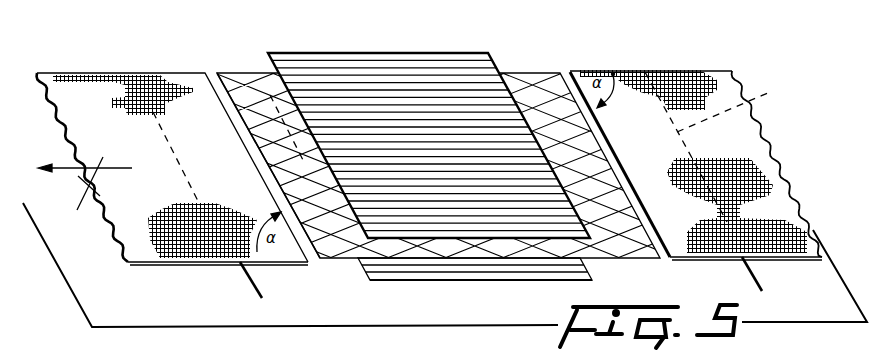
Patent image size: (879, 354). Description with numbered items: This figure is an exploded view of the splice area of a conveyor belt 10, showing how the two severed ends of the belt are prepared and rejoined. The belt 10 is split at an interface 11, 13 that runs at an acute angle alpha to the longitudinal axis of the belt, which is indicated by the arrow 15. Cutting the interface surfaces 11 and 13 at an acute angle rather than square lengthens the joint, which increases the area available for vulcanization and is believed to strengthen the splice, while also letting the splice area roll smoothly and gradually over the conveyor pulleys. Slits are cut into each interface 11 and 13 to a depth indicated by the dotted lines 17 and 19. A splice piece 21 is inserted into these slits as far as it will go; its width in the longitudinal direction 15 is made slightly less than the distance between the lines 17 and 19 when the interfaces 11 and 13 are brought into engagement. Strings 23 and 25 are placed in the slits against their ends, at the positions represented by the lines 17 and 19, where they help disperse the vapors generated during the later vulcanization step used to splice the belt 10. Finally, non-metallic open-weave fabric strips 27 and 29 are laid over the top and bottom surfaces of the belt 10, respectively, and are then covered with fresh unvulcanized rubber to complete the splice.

The belt 10 is at (76, 66).
The interface 11 is at (213, 73).
The interface 13 is at (570, 72).
The longitudinal axis arrow 15 is at (85, 192).
The dotted line 17 is at (146, 272).
The dotted line 19 is at (739, 103).
The splice piece 21 is at (240, 72).
The string 23 is at (137, 72).
The string 25 is at (642, 72).
The non-metallic open-weave fabric strip 27 is at (383, 53).
The non-metallic open-weave fabric strip 29 is at (405, 282).